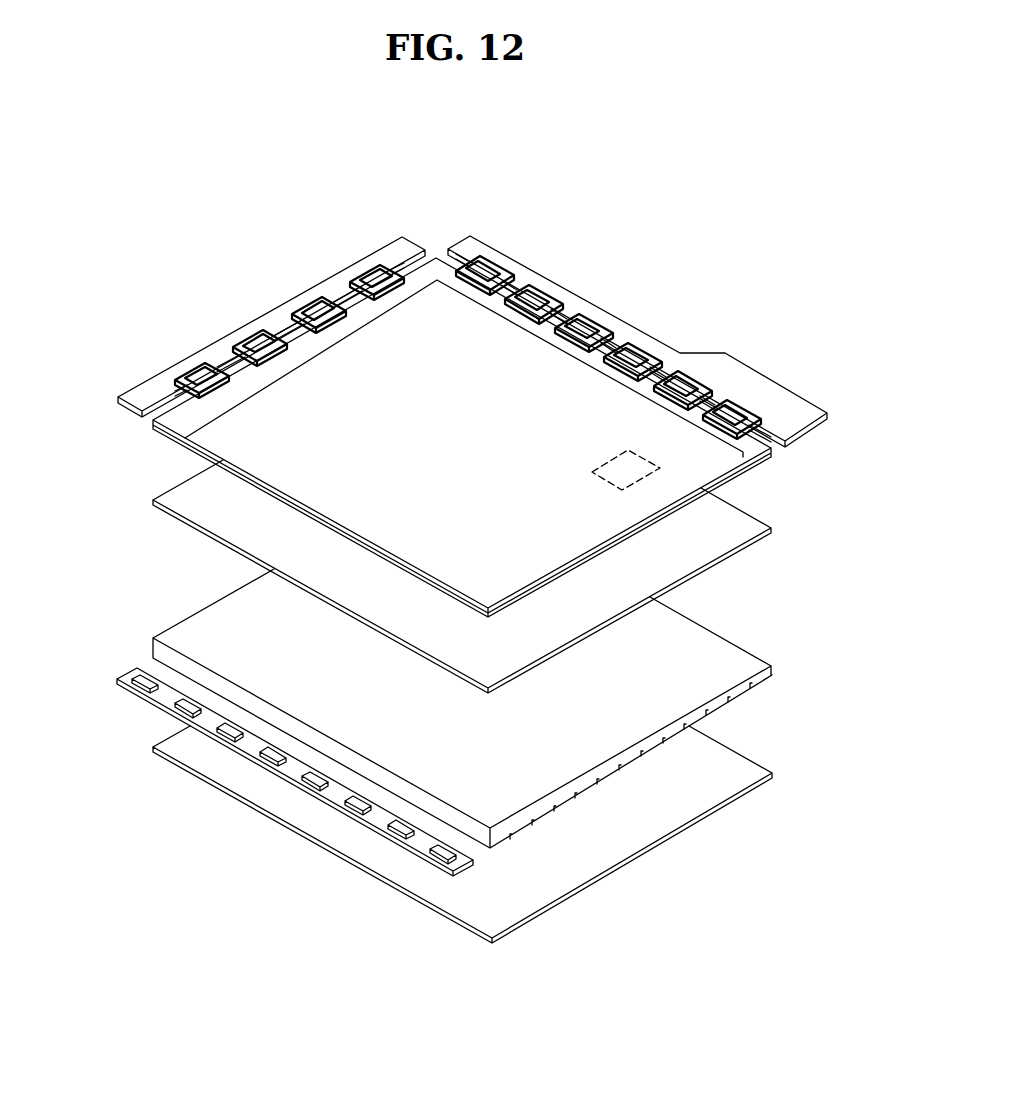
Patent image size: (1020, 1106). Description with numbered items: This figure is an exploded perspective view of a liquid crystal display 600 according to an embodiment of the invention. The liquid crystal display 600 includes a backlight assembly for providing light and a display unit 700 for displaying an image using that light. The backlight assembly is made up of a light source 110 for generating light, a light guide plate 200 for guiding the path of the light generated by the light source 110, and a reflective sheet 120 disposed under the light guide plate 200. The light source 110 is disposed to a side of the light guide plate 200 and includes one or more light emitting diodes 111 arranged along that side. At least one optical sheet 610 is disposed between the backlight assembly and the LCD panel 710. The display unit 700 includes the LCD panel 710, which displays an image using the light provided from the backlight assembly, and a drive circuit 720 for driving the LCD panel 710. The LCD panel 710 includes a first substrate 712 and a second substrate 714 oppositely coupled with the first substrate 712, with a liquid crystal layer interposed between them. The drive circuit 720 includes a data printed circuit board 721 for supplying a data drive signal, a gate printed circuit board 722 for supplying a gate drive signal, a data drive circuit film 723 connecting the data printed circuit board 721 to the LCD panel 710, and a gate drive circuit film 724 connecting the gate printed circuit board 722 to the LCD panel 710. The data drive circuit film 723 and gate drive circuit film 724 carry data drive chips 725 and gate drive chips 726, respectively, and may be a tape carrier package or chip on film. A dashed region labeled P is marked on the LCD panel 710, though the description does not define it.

The liquid crystal display 600 is at (230, 156).
The display unit 700 is at (166, 268).
The LCD panel 710 is at (107, 524).
The first substrate 712 is at (173, 419).
The second substrate 714 is at (220, 440).
The drive circuit 720 is at (510, 224).
The data printed circuit board 721 is at (740, 373).
The gate printed circuit board 722 is at (393, 247).
The data drive circuit film 723 is at (558, 305).
The gate drive circuit film 724 is at (367, 273).
The data drive chips 725 is at (523, 293).
The gate drive chips 726 is at (315, 303).
The pixel region P is at (648, 462).
The optical sheet 610 is at (748, 527).
The light guide plate 200 is at (773, 639).
The light source 110 is at (121, 707).
The light emitting diodes 111 is at (142, 673).
The reflective sheet 120 is at (250, 783).